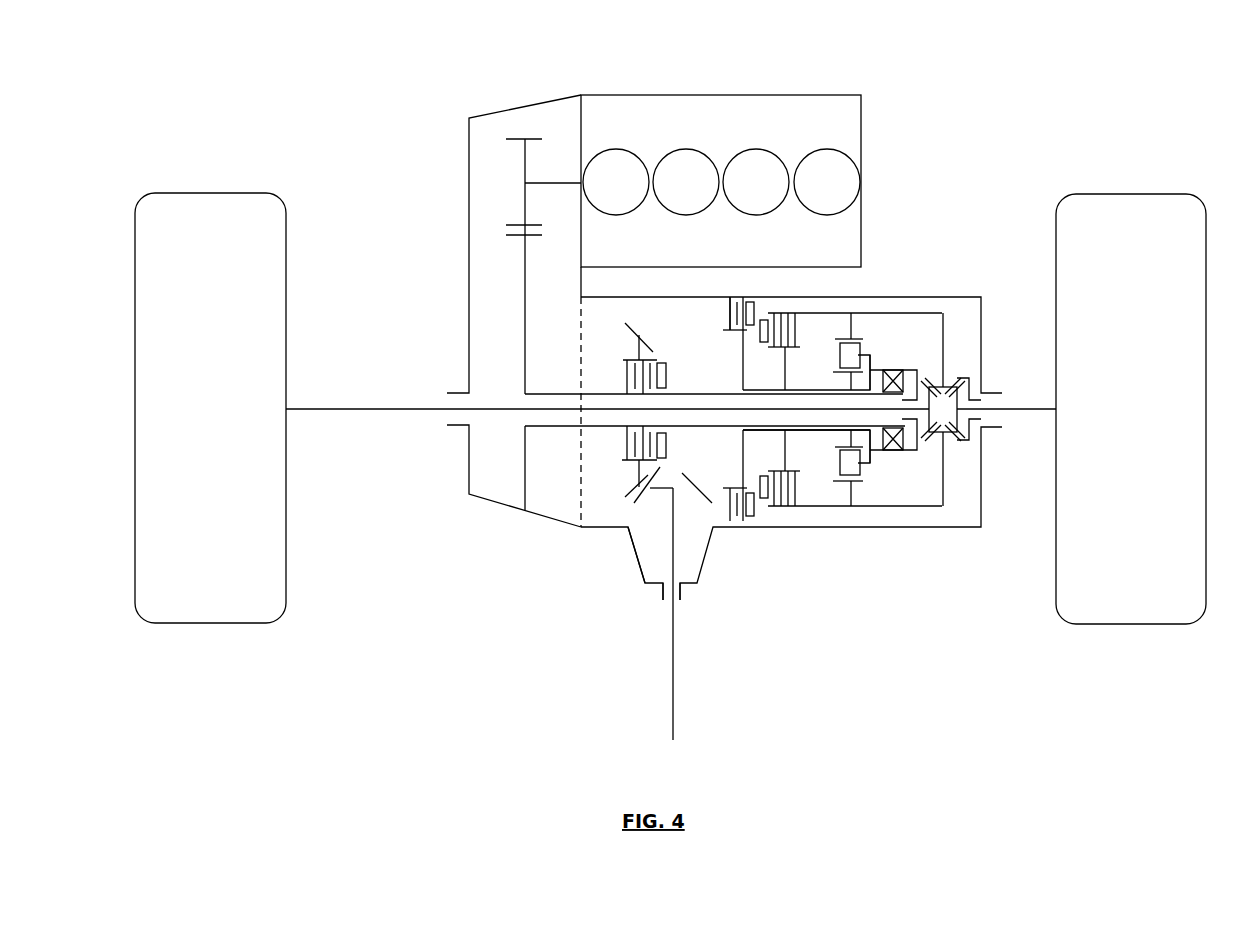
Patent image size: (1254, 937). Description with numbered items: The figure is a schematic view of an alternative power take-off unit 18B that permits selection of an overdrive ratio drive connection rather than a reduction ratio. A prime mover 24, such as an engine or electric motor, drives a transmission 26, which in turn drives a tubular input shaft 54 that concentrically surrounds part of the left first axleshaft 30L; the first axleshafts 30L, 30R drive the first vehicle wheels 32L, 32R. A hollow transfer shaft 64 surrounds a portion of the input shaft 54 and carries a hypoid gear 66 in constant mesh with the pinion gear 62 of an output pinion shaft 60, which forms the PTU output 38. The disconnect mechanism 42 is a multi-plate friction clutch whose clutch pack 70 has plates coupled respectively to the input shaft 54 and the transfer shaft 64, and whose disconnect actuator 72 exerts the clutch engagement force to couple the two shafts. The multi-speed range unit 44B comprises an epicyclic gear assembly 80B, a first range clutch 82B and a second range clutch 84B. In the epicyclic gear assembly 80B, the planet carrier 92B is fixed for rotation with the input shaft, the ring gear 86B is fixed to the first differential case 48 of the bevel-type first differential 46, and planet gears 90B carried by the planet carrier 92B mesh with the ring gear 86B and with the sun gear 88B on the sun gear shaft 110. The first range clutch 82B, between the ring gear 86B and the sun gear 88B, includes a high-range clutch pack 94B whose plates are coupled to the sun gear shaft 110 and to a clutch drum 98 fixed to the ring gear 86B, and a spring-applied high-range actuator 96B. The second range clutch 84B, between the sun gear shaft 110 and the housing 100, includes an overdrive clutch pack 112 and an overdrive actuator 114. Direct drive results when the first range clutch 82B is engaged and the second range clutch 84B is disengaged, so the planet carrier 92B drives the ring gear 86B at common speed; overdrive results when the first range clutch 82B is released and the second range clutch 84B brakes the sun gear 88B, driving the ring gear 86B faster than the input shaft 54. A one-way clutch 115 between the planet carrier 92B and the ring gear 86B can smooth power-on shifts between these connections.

The prime mover 24 is at (841, 90).
The transmission 26 is at (554, 95).
The first vehicle wheel 32L is at (206, 212).
The first vehicle wheel 32R is at (1124, 212).
The first axleshaft 30L is at (331, 406).
The first axleshaft 30R is at (1025, 406).
The input shaft 54 is at (552, 392).
The housing 100 is at (963, 527).
The transfer shaft 64 is at (627, 359).
The clutch pack 70 is at (633, 380).
The hypoid gear 66 is at (626, 323).
The disconnect mechanism 42 is at (619, 443).
The disconnect actuator 72 is at (670, 444).
The pinion gear 62 is at (703, 498).
The output pinion shaft 60 is at (675, 632).
The PTU output 38 is at (651, 617).
The power take-off unit 18B is at (633, 554).
The second range clutch 84B is at (734, 295).
The overdrive actuator 114 is at (750, 301).
The overdrive clutch pack 112 is at (729, 314).
The first range clutch 82B is at (798, 294).
The multi-speed range unit 44B is at (827, 328).
The ring gear 86B is at (944, 312).
The high-range actuator 96B is at (763, 343).
The high-range clutch pack 94B is at (796, 334).
The planet gears 90B is at (859, 345).
The one-way clutch 115 is at (895, 371).
The planet carrier 92B is at (871, 454).
The first differential 46 is at (965, 377).
The first differential case 48 is at (963, 441).
The sun gear shaft 110 is at (835, 431).
The sun gear 88B is at (836, 448).
The clutch drum 98 is at (838, 508).
The epicyclic gear assembly 80B is at (880, 490).